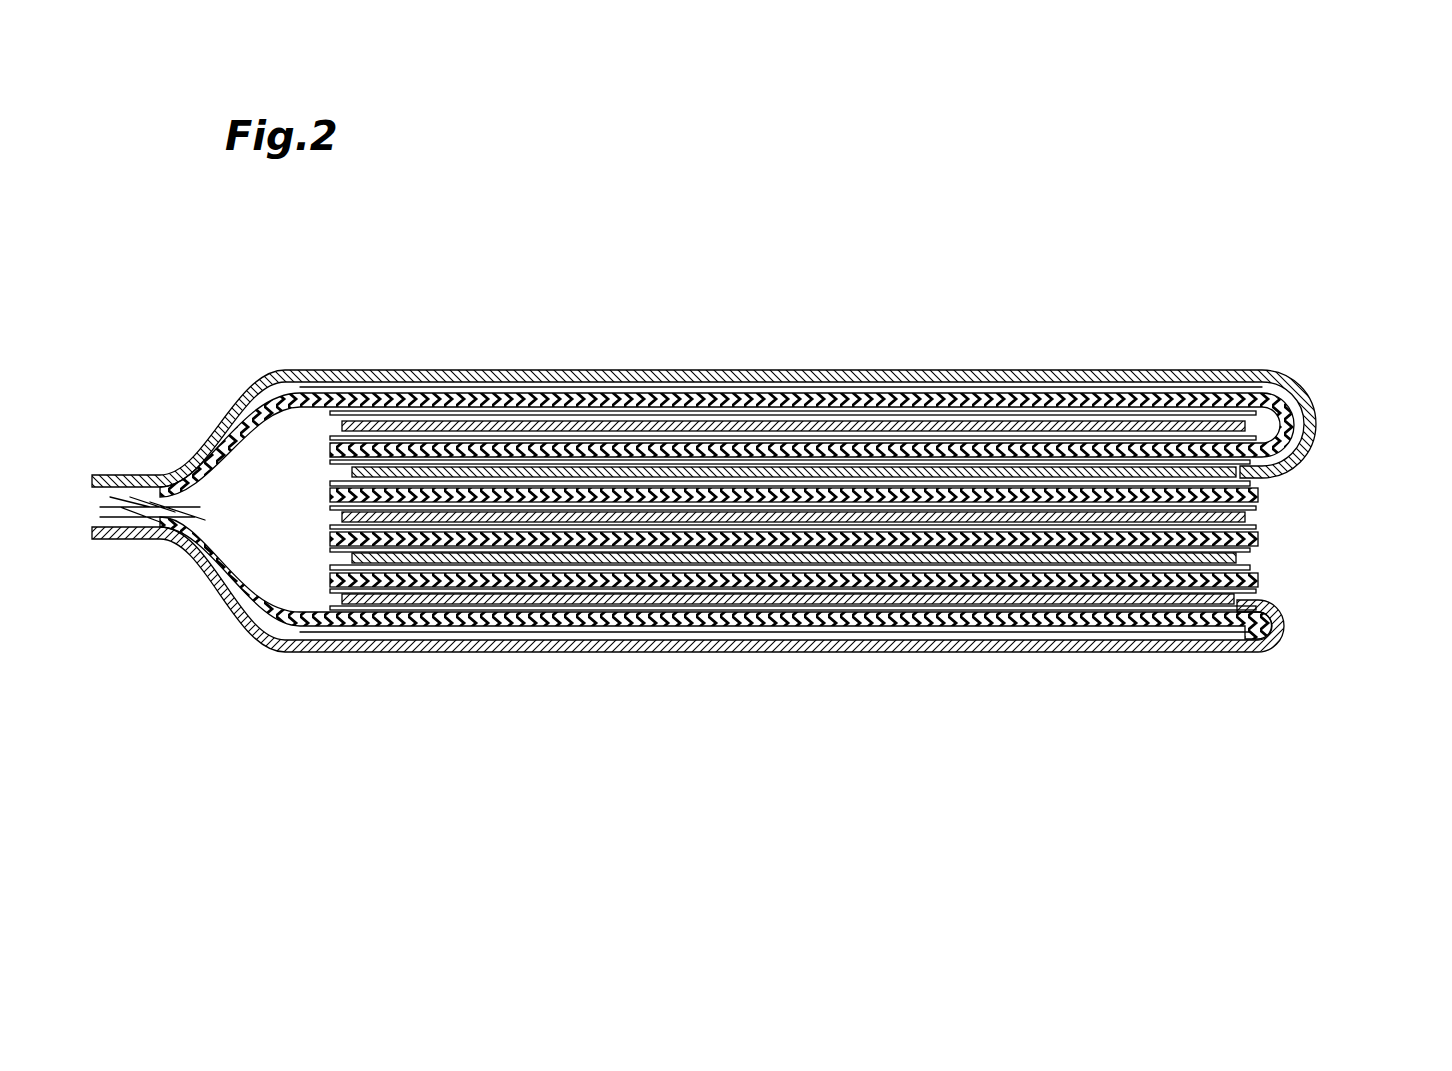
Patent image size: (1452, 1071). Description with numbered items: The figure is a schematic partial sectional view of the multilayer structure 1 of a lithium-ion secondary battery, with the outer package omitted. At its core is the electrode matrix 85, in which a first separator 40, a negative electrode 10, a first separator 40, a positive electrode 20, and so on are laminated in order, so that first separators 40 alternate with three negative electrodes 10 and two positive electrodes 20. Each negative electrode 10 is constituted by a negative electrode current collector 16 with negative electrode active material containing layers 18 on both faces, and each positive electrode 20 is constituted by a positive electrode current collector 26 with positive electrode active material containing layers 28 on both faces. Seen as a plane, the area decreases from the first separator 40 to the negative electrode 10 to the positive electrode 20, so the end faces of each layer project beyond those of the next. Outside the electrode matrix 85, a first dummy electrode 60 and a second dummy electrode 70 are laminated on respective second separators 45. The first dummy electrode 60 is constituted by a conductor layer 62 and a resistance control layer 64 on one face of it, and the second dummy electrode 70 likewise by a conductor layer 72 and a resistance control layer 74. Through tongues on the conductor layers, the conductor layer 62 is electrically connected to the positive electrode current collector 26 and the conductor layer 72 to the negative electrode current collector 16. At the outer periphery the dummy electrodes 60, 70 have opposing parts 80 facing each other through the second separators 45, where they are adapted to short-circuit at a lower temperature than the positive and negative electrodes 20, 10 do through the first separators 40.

The multilayer structure 1 is at (1138, 244).
The negative electrode 10 is at (1358, 349).
The negative electrode current collector 16 is at (1256, 426).
The negative electrode active material containing layer 18 is at (1256, 411).
The positive electrode 20 is at (1358, 421).
The positive electrode current collector 26 is at (1238, 472).
The positive electrode active material containing layer 28 is at (1250, 462).
The first separator 40 is at (1282, 383).
The second separator 45 is at (663, 398).
The first dummy electrode 60 is at (498, 296).
The conductor layer 62 is at (519, 370).
The resistance control layer 64 is at (581, 392).
The second dummy electrode 70 is at (498, 720).
The conductor layer 72 is at (521, 652).
The resistance control layer 74 is at (582, 628).
The opposing part 80 is at (165, 550).
The electrode matrix 85 is at (1400, 325).